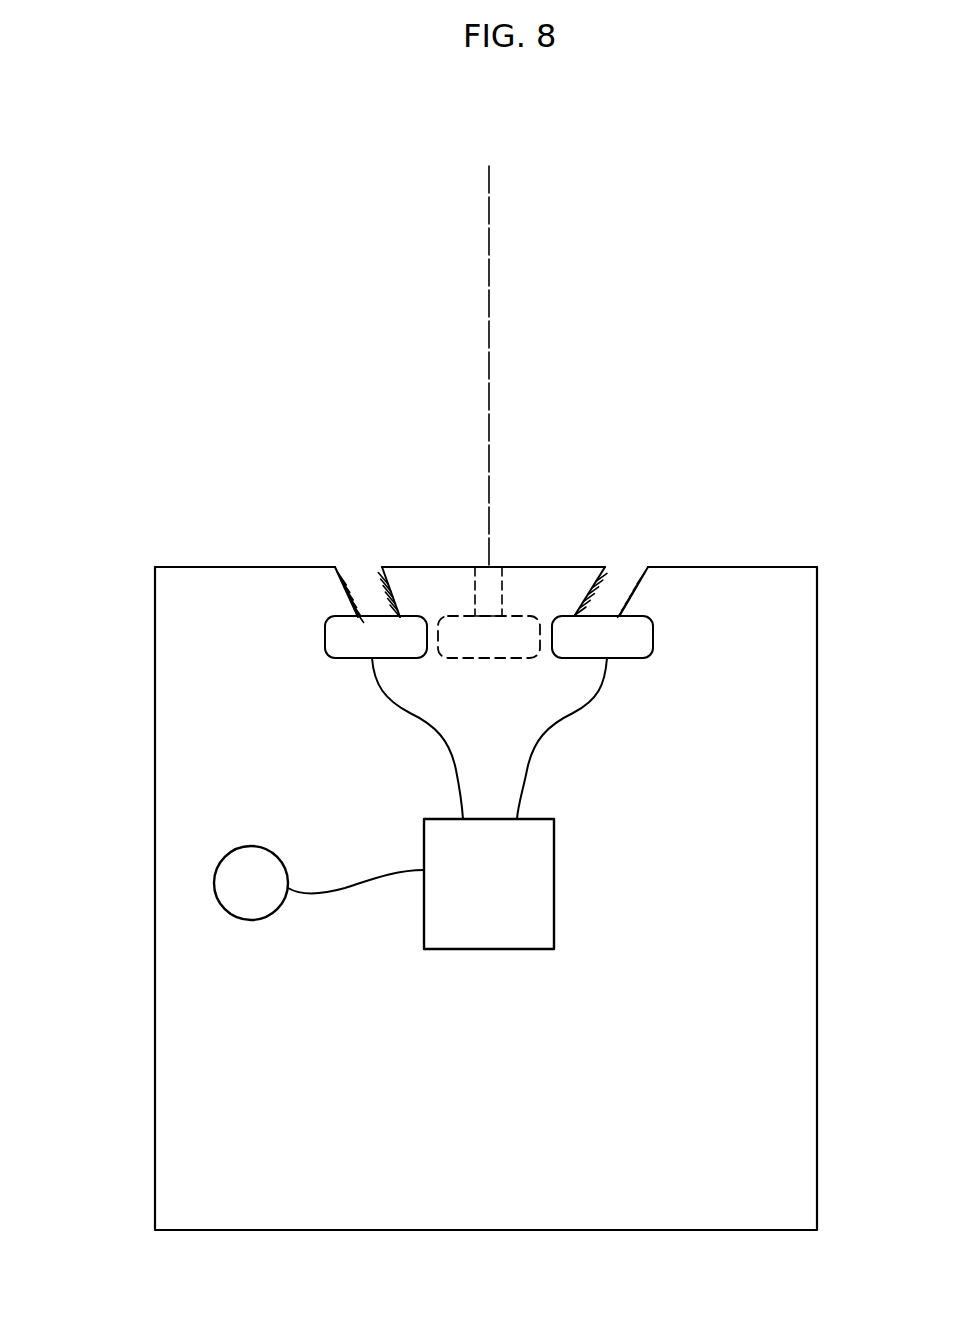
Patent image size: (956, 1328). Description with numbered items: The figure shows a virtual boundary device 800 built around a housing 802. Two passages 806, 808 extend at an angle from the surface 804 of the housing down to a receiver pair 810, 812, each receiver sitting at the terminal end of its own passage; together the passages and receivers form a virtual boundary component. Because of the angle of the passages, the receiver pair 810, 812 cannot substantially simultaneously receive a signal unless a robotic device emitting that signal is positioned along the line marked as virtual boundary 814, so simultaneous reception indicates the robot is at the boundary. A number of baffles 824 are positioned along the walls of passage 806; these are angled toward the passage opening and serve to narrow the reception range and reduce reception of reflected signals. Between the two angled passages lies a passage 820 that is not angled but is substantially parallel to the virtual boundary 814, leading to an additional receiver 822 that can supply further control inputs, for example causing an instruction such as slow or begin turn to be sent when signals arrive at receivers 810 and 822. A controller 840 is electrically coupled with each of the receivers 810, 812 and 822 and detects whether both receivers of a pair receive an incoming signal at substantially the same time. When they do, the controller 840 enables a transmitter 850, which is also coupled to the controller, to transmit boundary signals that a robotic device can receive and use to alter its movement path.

The virtual boundary device 800 is at (172, 565).
The housing 802 is at (155, 720).
The surface 804 is at (770, 567).
The passage 806 is at (358, 555).
The passage 808 is at (623, 558).
The receiver 810 is at (325, 636).
The receiver 812 is at (653, 630).
The virtual boundary 814 is at (462, 366).
The passage 820 is at (472, 552).
The receiver 822 is at (488, 663).
The baffles 824 is at (337, 570).
The controller 840 is at (488, 949).
The transmitter 850 is at (252, 921).